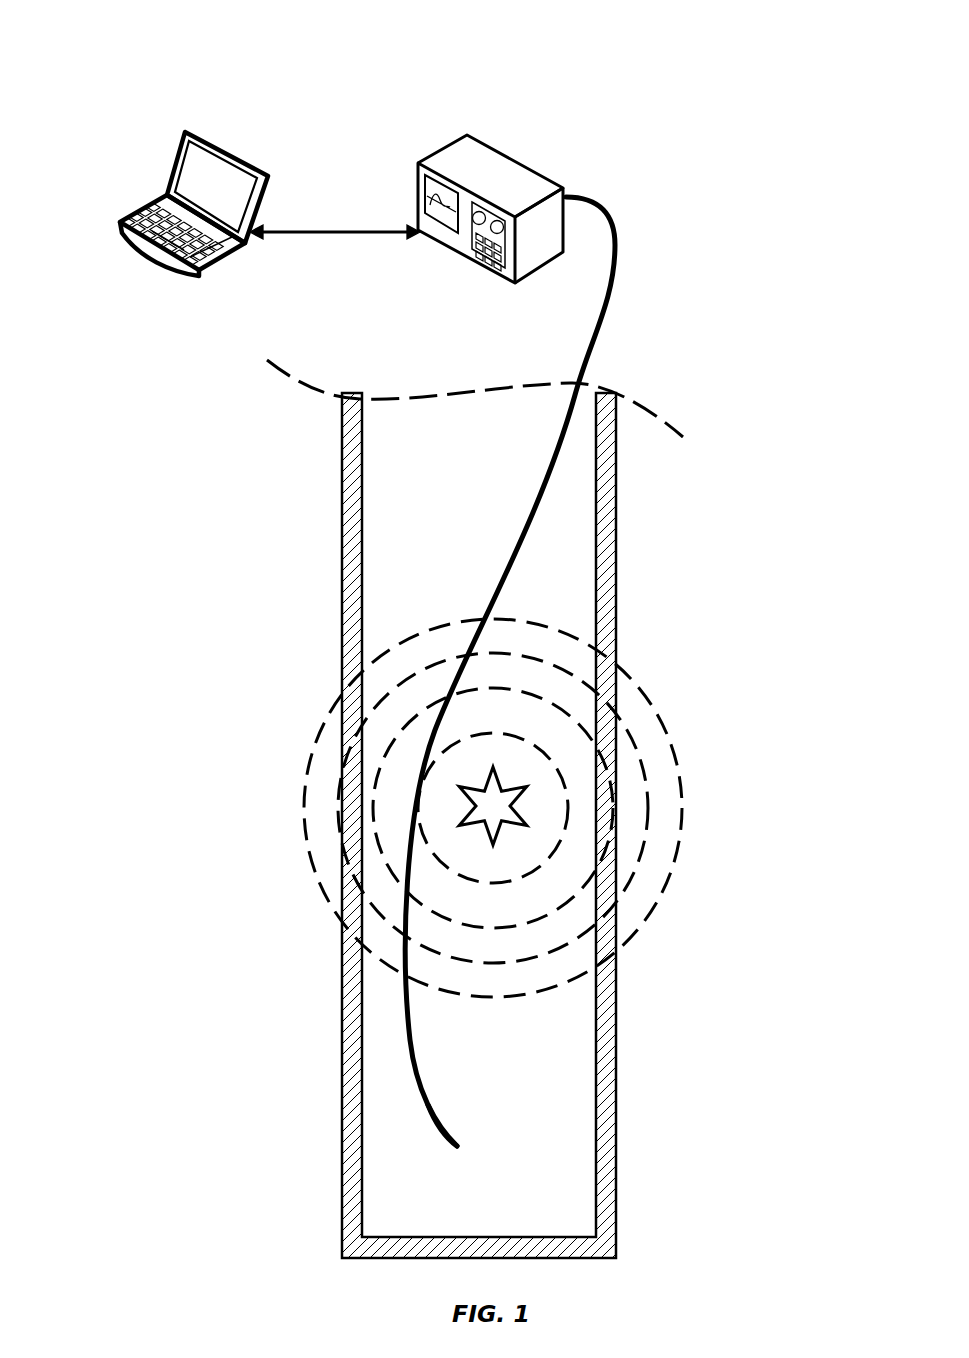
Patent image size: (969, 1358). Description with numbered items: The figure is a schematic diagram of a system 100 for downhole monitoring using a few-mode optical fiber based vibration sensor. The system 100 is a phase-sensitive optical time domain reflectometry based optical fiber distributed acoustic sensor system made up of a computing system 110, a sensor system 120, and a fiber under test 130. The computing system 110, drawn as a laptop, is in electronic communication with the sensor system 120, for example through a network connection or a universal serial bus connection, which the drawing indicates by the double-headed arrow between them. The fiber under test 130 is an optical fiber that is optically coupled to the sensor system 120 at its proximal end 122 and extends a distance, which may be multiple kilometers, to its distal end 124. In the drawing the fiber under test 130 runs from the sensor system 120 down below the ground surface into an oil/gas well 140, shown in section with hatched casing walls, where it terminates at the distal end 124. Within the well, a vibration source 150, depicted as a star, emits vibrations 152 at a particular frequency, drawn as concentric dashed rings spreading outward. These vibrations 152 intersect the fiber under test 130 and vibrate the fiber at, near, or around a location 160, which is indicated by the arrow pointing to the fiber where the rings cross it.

The system 100 is at (79, 51).
The computing system 110 is at (145, 256).
The sensor system 120 is at (458, 256).
The proximal end 122 is at (554, 177).
The distal end 124 is at (442, 1132).
The fiber under test 130 is at (612, 306).
The oil/gas well 140 is at (341, 508).
The vibration source 150 is at (512, 793).
The vibrations 152 is at (683, 806).
The location 160 is at (408, 812).